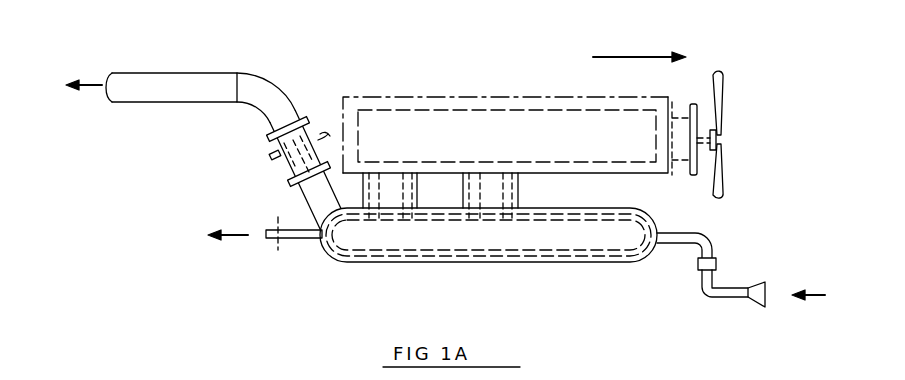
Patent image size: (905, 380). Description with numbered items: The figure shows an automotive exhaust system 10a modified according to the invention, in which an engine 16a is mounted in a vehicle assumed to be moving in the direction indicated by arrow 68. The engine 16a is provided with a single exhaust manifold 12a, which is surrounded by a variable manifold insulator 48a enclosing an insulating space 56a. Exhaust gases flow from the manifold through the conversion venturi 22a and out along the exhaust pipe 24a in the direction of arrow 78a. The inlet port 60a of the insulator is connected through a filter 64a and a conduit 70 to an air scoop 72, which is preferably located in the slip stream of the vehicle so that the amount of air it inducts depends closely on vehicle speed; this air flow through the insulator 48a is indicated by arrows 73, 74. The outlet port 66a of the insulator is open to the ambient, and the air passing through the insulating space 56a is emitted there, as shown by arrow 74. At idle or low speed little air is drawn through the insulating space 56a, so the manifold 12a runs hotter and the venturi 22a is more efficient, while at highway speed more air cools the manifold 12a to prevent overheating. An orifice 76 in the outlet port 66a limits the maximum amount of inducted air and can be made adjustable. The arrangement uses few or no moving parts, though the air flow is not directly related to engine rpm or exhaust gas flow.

The automotive exhaust system 10a is at (558, 284).
The exhaust manifold 12a is at (488, 267).
The engine 16a is at (468, 92).
The conversion venturi 22a is at (280, 160).
The air intake pipe 24a is at (198, 72).
The variable manifold insulator 48a is at (550, 265).
The insulating space 56a is at (427, 255).
The inlet port 60a is at (698, 233).
The filter 64a is at (718, 265).
The outlet port 66a is at (300, 238).
The arrow 68 is at (613, 55).
The conduit 70 is at (707, 298).
The air scoop 72 is at (757, 305).
The arrow 73 is at (813, 302).
The arrow 74 is at (218, 240).
The orifice 76 is at (275, 250).
The arrow 78a is at (87, 83).